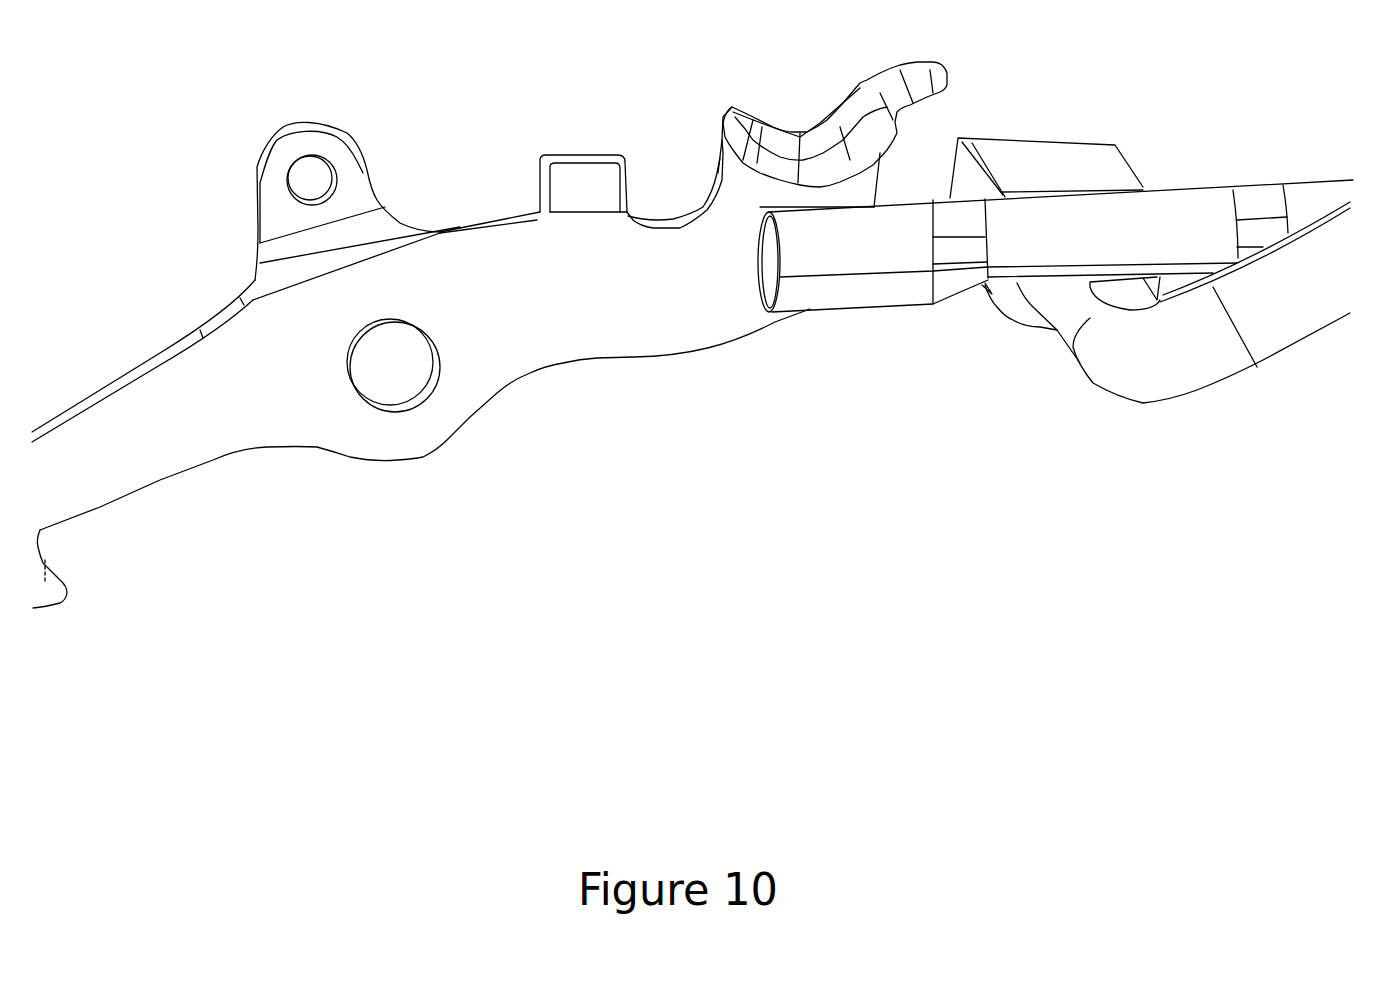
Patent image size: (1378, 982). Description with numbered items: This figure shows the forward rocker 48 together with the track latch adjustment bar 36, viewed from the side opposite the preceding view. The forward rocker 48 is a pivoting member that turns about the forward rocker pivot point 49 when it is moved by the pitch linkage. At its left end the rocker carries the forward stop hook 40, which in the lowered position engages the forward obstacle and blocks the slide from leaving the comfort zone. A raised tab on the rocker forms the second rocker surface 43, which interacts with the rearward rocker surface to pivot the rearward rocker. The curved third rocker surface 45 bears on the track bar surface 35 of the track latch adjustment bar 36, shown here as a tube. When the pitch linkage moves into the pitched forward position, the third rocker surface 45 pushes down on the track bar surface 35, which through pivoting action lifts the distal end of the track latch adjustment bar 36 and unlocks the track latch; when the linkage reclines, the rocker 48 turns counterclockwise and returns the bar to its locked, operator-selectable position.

The track bar surface 35 is at (857, 213).
The track latch adjustment bar 36 is at (1178, 103).
The forward stop hook 40 is at (50, 540).
The second rocker surface 43 is at (537, 180).
The third rocker surface 45 is at (843, 187).
The forward rocker 48 is at (595, 313).
The forward rocker pivot point 49 is at (405, 379).